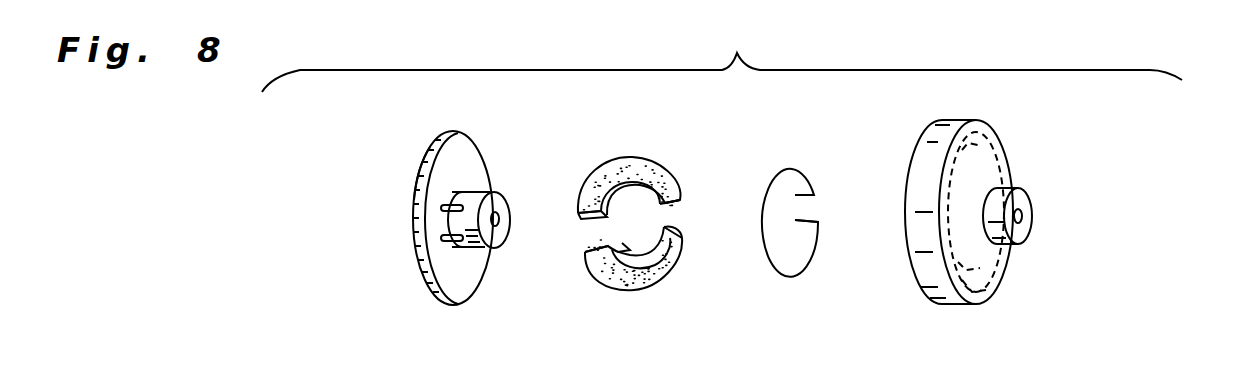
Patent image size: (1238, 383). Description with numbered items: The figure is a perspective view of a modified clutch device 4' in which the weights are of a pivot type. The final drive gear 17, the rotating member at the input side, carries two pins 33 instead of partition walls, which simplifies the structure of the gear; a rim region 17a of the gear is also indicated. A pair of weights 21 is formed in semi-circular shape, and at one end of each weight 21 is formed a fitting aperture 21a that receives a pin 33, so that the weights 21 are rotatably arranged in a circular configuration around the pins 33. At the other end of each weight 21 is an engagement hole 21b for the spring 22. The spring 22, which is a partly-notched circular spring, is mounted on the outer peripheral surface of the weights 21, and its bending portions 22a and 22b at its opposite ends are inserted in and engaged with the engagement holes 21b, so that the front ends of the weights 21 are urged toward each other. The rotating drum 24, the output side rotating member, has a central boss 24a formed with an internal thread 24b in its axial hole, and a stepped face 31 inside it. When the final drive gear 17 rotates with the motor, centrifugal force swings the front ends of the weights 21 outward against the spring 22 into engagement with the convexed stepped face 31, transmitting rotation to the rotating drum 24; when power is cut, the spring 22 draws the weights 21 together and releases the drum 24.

The clutch device 4' is at (722, 47).
The final drive gear 17 is at (453, 282).
The rim of disc 17a is at (428, 146).
The pin 33 is at (441, 208).
The weight 21 is at (615, 162).
The fitting aperture 21a is at (673, 180).
The engagement hole 21b is at (580, 198).
The spring 22 is at (790, 278).
The bending portion 22a is at (808, 196).
The bending portion 22b is at (805, 222).
The rotating drum 24 is at (933, 283).
The central boss 24a is at (1015, 232).
The internal thread 24b is at (1022, 216).
The stepped face 31 is at (1002, 142).